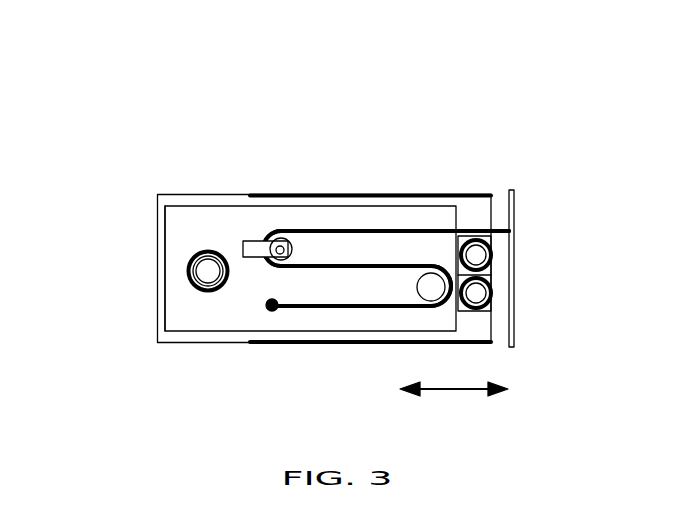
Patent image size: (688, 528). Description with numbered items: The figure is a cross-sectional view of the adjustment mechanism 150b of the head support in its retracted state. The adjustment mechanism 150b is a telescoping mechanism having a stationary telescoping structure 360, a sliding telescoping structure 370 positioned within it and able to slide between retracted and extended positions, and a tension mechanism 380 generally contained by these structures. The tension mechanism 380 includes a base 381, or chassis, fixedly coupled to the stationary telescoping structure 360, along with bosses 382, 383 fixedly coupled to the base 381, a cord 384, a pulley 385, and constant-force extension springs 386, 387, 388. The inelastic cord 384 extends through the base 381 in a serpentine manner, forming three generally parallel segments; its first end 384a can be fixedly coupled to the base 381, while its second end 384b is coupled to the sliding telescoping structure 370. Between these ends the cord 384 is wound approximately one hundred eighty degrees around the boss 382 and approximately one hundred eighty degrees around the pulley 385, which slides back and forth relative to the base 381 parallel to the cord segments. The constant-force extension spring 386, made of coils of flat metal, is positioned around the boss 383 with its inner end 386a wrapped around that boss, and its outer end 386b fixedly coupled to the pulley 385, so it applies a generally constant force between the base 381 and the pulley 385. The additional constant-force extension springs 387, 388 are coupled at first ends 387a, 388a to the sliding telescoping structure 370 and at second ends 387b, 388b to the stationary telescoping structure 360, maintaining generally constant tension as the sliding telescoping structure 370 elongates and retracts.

The adjustment mechanism 150b is at (504, 90).
The tension mechanism 380 is at (184, 230).
The stationary telescoping structure 360 is at (165, 262).
The base 381 is at (212, 333).
The sliding telescoping structure 370 is at (514, 347).
The cord 384 is at (402, 228).
The first end 384a is at (280, 311).
The second end 384b is at (506, 226).
The pulley 385 is at (298, 238).
The constant-force extension spring 386 is at (187, 283).
The inner end 386a is at (212, 250).
The outer end 386b is at (259, 244).
The boss 383 is at (193, 278).
The boss 382 is at (418, 294).
The constant-force extension spring 387 is at (492, 257).
The first end 387a is at (492, 247).
The second end 387b is at (467, 236).
The constant-force extension spring 388 is at (492, 305).
The first end 388a is at (492, 290).
The second end 388b is at (452, 268).